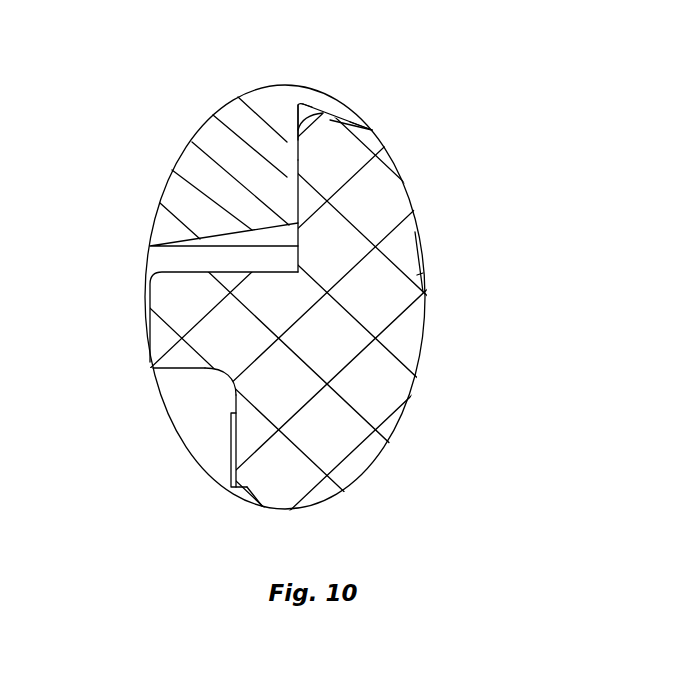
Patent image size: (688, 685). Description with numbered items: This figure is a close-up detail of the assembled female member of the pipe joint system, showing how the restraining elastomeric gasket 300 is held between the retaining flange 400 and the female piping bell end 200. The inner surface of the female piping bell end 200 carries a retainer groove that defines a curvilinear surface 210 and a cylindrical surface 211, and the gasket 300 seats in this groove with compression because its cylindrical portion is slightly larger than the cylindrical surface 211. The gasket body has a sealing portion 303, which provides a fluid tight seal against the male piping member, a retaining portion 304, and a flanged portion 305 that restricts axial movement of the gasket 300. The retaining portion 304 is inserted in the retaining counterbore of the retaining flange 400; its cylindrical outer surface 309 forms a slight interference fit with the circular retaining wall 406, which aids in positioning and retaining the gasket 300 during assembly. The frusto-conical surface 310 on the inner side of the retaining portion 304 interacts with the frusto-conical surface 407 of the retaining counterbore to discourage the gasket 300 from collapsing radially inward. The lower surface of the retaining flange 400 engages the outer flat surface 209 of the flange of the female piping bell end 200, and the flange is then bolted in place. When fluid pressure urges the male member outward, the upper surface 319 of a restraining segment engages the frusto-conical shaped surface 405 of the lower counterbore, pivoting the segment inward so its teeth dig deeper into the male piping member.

The female piping bell end 200 is at (207, 438).
The outer flat surface 209 is at (160, 362).
The curvilinear surface 210 is at (198, 383).
The cylindrical surface 211 is at (227, 460).
The restraining elastomeric gasket 300 is at (375, 298).
The sealing portion 303 is at (360, 450).
The retaining portion 304 is at (362, 194).
The flanged portion 305 is at (160, 302).
The cylindrical outer surface 309 is at (287, 142).
The frusto-conical surface 310 is at (364, 120).
The upper surface 319 is at (183, 265).
The retaining flange 400 is at (288, 104).
The frusto-conical shaped surface 405 is at (240, 220).
The circular retaining wall 406 is at (287, 176).
The frusto-conical surface 407 is at (318, 106).